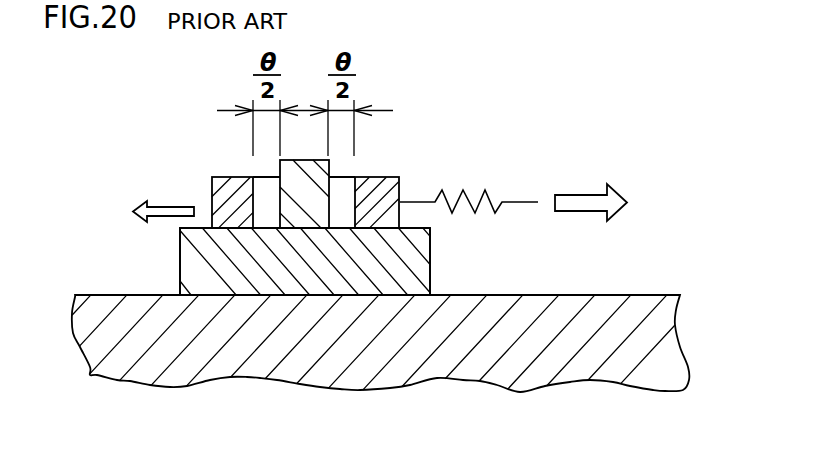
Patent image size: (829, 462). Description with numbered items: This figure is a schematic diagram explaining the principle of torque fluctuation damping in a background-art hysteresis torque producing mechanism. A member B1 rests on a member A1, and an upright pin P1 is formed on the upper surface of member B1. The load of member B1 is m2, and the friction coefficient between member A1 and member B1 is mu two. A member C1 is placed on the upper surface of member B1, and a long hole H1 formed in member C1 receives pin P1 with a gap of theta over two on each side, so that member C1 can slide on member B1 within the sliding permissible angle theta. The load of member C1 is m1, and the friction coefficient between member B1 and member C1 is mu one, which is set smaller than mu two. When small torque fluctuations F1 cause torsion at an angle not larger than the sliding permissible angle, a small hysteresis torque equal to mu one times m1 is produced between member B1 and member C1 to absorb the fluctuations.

The member A1 is at (640, 317).
The member B1 is at (414, 262).
The load of member B1 m2 is at (192, 262).
The upright pin P1 is at (283, 173).
The load of member C1 m1 is at (232, 183).
The member C1 is at (374, 186).
The long hole H1 is at (342, 186).
The small torque fluctuations F1 is at (609, 202).